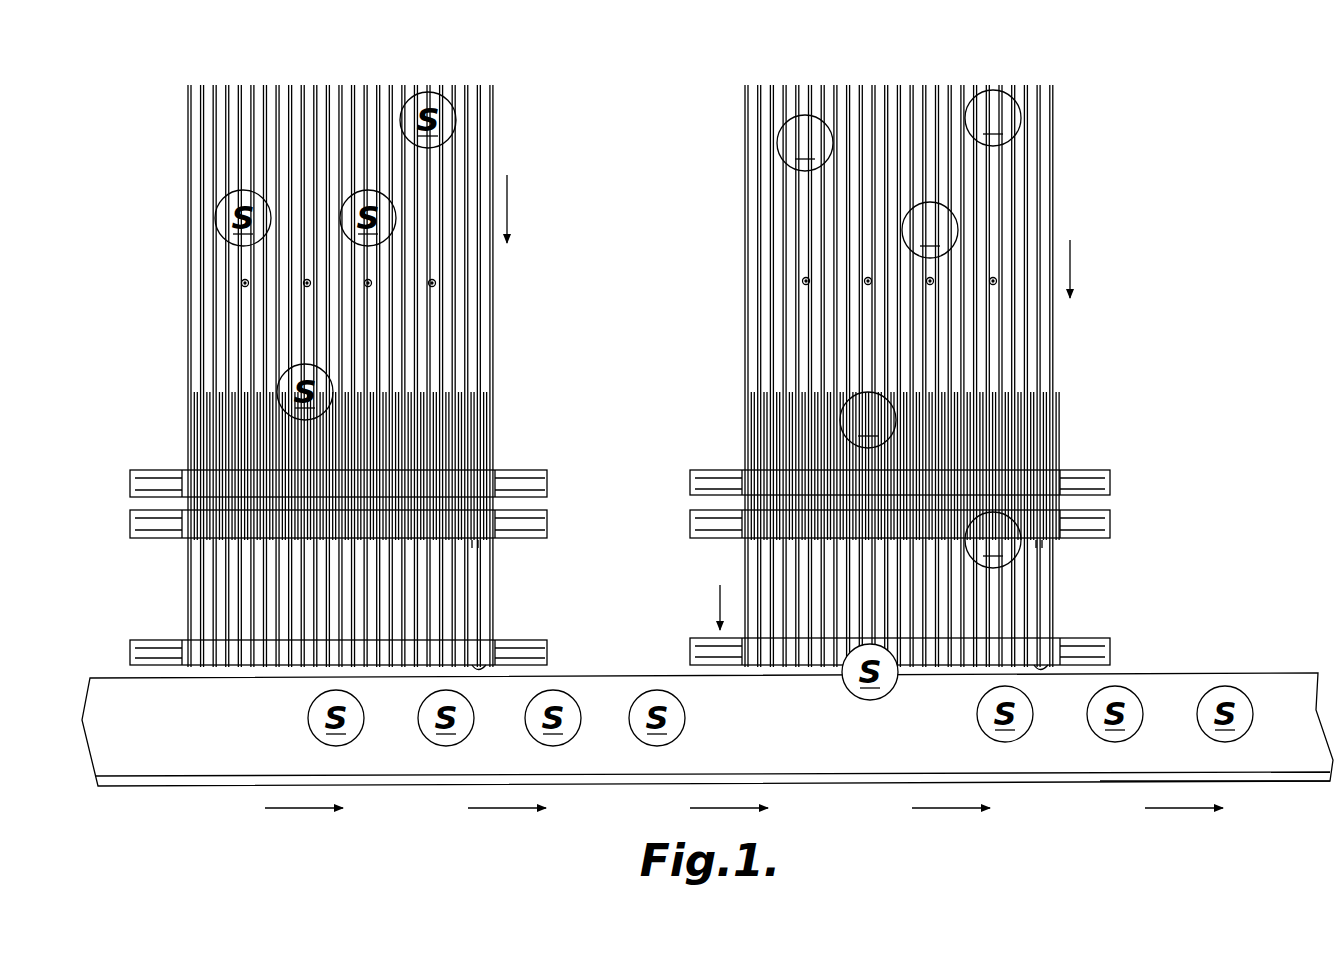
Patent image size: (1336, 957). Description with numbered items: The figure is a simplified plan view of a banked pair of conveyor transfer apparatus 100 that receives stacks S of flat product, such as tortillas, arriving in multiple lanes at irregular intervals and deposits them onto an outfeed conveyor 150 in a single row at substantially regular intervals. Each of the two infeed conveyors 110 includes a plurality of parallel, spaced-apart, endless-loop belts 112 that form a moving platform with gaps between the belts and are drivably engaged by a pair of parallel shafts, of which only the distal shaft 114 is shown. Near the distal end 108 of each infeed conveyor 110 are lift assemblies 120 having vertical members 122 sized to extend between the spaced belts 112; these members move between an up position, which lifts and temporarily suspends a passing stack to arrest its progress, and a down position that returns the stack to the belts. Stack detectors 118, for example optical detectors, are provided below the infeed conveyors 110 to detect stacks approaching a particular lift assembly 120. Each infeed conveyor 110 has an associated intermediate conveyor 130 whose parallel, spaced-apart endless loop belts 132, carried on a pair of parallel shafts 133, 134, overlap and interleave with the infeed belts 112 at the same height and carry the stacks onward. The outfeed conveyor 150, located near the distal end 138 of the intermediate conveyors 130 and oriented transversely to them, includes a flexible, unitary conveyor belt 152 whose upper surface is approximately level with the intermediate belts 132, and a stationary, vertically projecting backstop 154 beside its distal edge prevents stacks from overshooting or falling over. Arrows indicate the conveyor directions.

The conveyor transfer apparatus 100 is at (707, 451).
The distal end 108 is at (478, 542).
The infeed conveyor 110 is at (627, 312).
The endless-loop belts 112 is at (224, 138).
The distal shaft 114 is at (545, 522).
The stack detectors 118 is at (303, 281).
The lift assembly 120 is at (667, 462).
The vertical members 122 is at (1040, 438).
The intermediate conveyor 130 is at (636, 603).
The endless loop belts 132 is at (214, 624).
The parallel shaft 133 is at (538, 478).
The parallel shaft 134 is at (548, 650).
The distal end 138 is at (474, 666).
The outfeed conveyor 150 is at (707, 757).
The conveyor belt 152 is at (145, 745).
The backstop 154 is at (1262, 788).